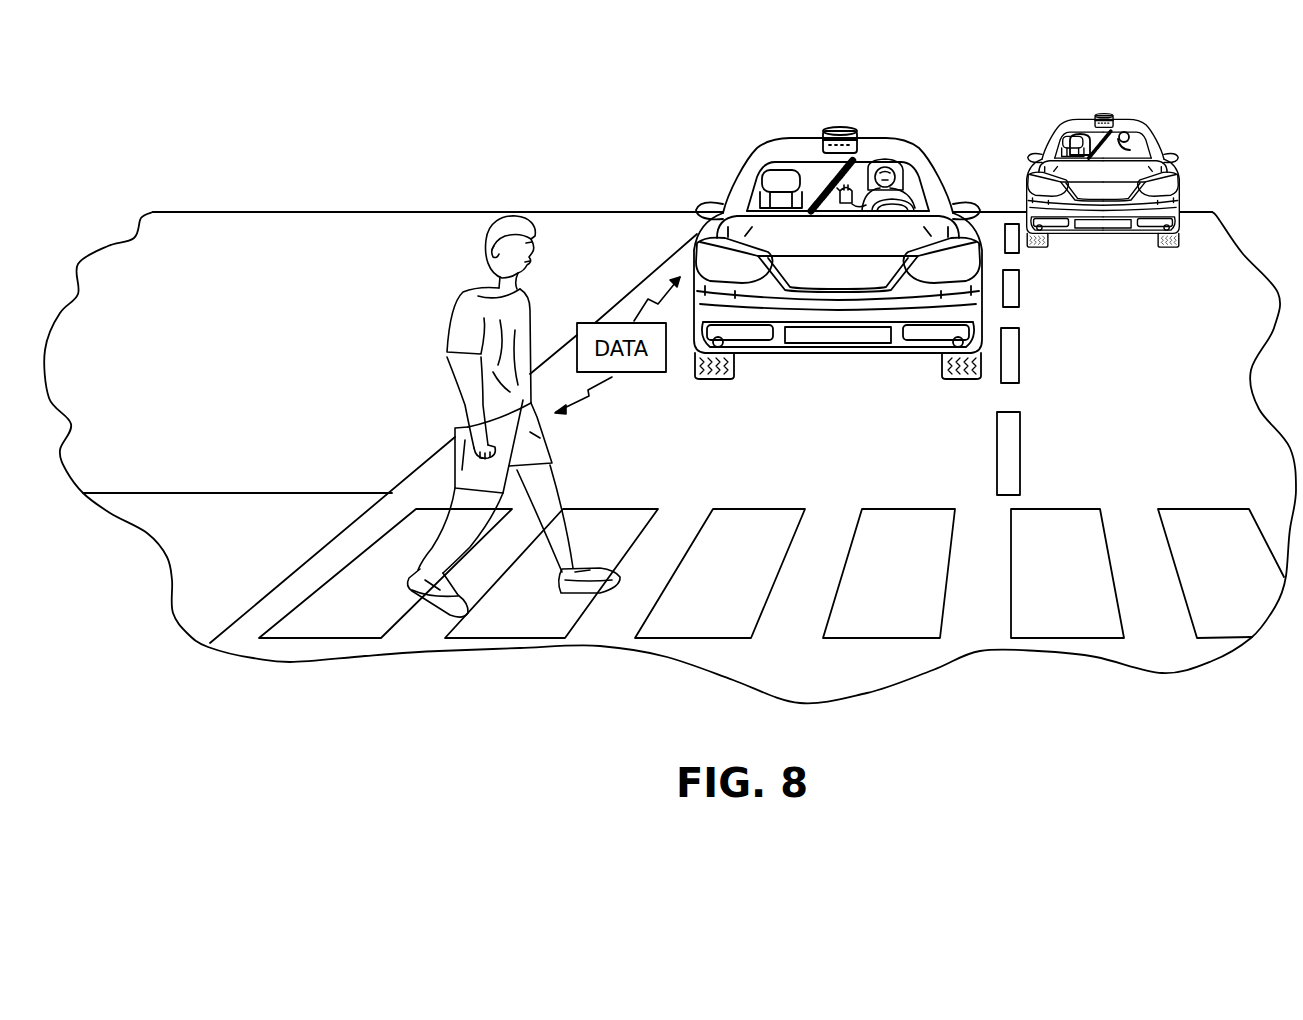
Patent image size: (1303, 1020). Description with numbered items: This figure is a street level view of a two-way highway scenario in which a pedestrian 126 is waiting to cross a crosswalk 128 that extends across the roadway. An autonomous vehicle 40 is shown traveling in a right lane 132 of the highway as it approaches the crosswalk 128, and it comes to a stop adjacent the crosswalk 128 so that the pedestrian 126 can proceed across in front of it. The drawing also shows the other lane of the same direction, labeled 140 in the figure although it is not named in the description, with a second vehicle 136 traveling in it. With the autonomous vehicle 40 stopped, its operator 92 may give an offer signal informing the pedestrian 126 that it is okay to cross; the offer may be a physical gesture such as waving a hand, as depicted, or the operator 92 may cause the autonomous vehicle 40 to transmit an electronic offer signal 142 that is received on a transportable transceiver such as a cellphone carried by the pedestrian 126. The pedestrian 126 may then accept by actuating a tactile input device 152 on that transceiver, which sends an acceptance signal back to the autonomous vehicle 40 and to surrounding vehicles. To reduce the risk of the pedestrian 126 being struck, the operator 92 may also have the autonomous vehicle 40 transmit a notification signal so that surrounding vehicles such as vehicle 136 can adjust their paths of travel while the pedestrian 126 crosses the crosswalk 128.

The autonomous vehicle 40 is at (897, 143).
The operator 92 is at (923, 198).
The pedestrian 126 is at (452, 333).
The crosswalk 128 is at (913, 585).
The right lane 132 is at (860, 440).
The vehicle 136 is at (1133, 124).
The adjacent lane 140 is at (1112, 398).
The offer signal 142 is at (589, 393).
The tactile input device 152 is at (636, 304).